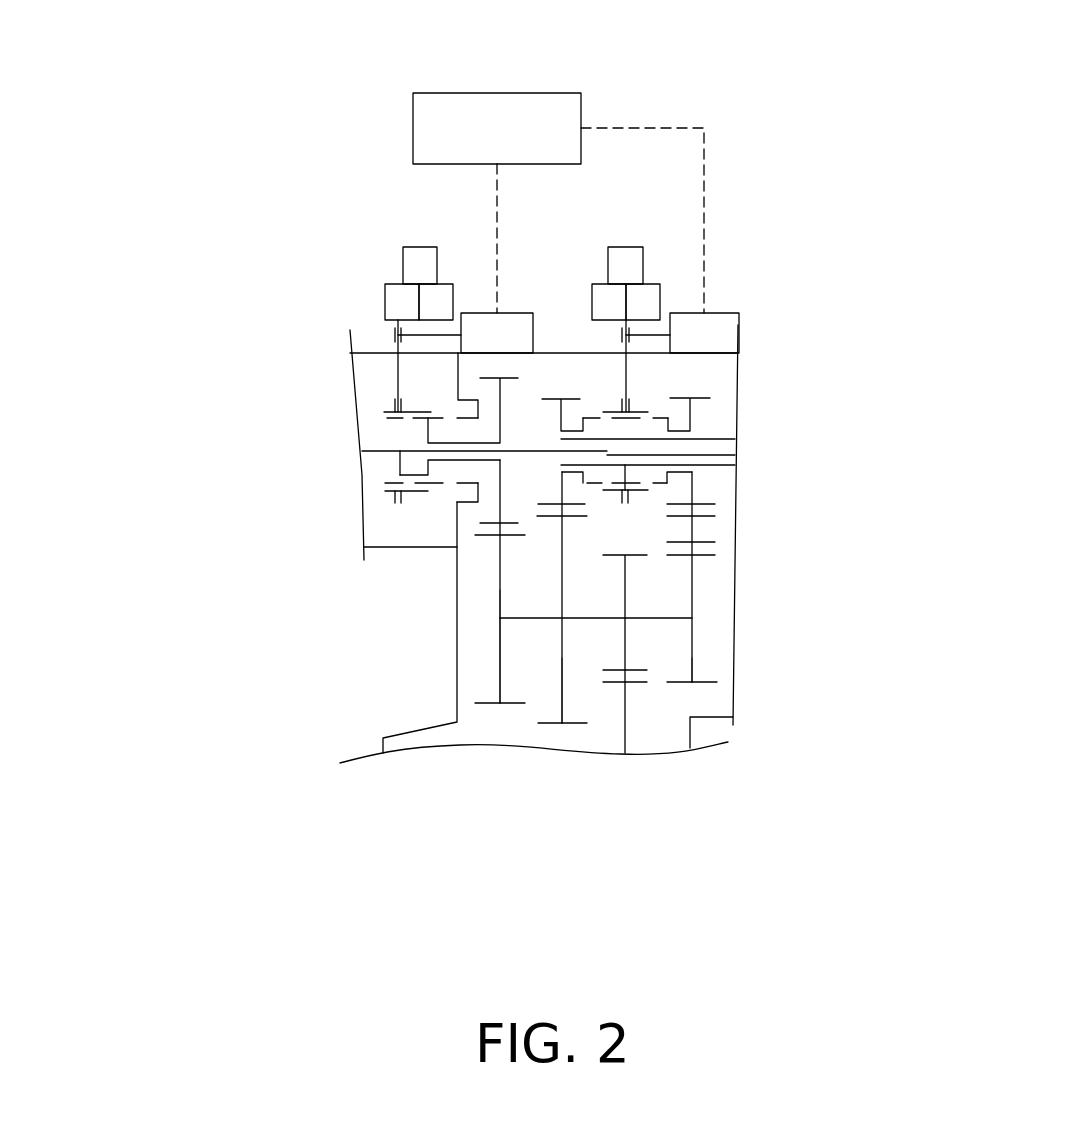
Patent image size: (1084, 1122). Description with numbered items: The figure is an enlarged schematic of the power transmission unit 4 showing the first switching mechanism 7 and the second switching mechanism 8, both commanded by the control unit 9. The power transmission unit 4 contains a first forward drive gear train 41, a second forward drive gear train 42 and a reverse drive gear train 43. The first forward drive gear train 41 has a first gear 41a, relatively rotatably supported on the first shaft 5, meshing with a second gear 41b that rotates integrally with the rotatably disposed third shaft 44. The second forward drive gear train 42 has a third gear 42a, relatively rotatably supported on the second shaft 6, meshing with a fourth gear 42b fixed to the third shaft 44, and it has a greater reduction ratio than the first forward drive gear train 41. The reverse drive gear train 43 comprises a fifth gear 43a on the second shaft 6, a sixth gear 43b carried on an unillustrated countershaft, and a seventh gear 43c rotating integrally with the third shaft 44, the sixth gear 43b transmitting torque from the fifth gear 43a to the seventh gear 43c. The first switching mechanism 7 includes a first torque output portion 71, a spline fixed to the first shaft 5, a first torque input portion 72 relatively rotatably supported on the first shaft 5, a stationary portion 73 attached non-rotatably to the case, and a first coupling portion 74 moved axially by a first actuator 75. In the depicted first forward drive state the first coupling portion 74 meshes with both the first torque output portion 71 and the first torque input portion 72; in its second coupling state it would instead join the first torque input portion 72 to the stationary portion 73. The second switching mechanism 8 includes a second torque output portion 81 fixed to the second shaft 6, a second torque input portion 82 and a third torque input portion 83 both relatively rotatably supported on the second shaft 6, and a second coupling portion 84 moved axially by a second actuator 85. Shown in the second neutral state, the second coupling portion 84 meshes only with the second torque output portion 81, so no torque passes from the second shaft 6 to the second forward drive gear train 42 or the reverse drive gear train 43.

The power transmission unit 4 is at (332, 693).
The first shaft 5 is at (373, 452).
The second shaft 6 is at (718, 472).
The first switching mechanism 7 is at (388, 380).
The second switching mechanism 8 is at (692, 372).
The control unit 9 is at (497, 93).
The first forward drive gear train 41 is at (497, 723).
The first gear 41a is at (497, 510).
The second gear 41b is at (500, 590).
The second forward drive gear train 42 is at (562, 735).
The third gear 42a is at (548, 497).
The fourth gear 42b is at (562, 658).
The reverse drive gear train 43 is at (703, 693).
The fifth gear 43a is at (695, 488).
The sixth gear 43b is at (695, 527).
The seventh gear 43c is at (692, 658).
The third shaft 44 is at (670, 618).
The first torque output portion 71 is at (402, 425).
The first torque input portion 72 is at (425, 473).
The stationary portion 73 is at (460, 483).
The first coupling portion 74 is at (395, 408).
The first actuator 75 is at (517, 313).
The second torque output portion 81 is at (627, 427).
The second torque input portion 82 is at (590, 418).
The third torque input portion 83 is at (655, 421).
The second coupling portion 84 is at (640, 410).
The second actuator 85 is at (716, 313).